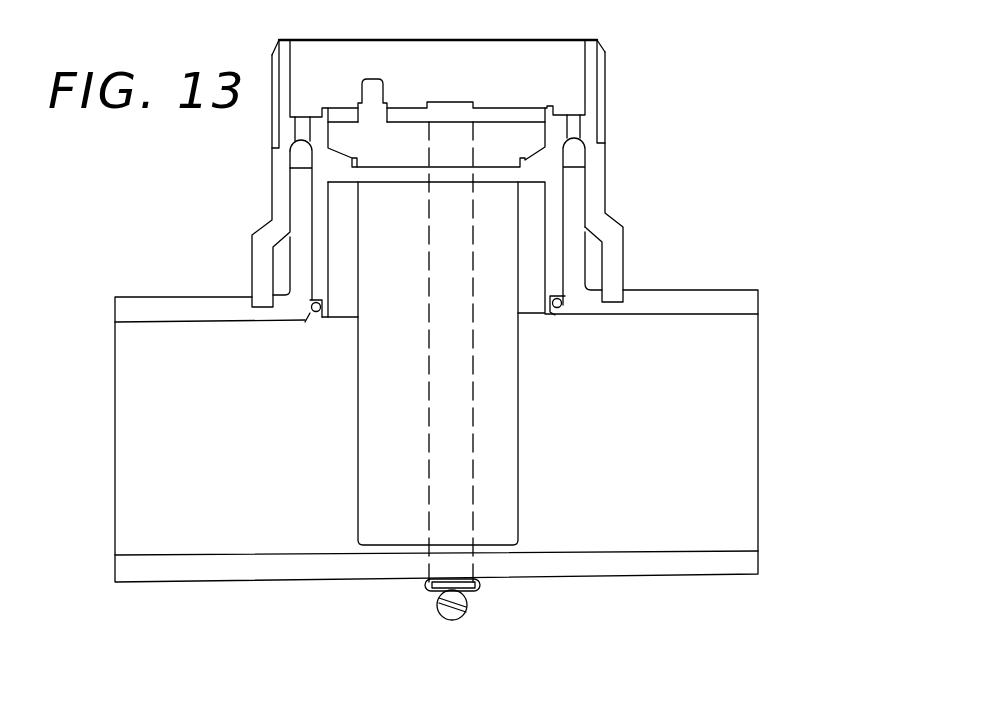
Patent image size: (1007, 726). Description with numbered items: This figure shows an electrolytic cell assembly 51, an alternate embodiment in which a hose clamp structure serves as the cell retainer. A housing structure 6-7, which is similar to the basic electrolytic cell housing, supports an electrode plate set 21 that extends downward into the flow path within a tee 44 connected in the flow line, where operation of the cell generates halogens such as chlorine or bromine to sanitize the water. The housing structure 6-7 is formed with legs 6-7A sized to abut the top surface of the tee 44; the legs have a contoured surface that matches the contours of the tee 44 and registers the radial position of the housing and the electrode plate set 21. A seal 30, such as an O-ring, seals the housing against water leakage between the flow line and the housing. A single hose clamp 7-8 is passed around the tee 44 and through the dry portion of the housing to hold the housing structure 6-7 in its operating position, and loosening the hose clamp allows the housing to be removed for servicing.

The cell assembly 51 is at (634, 97).
The housing structure 6-7 is at (603, 160).
The legs 6-7A is at (616, 255).
The tee 44 is at (738, 297).
The seal 30 is at (308, 316).
The electrode plate set 21 is at (348, 427).
The hose clamp 7-8 is at (469, 600).